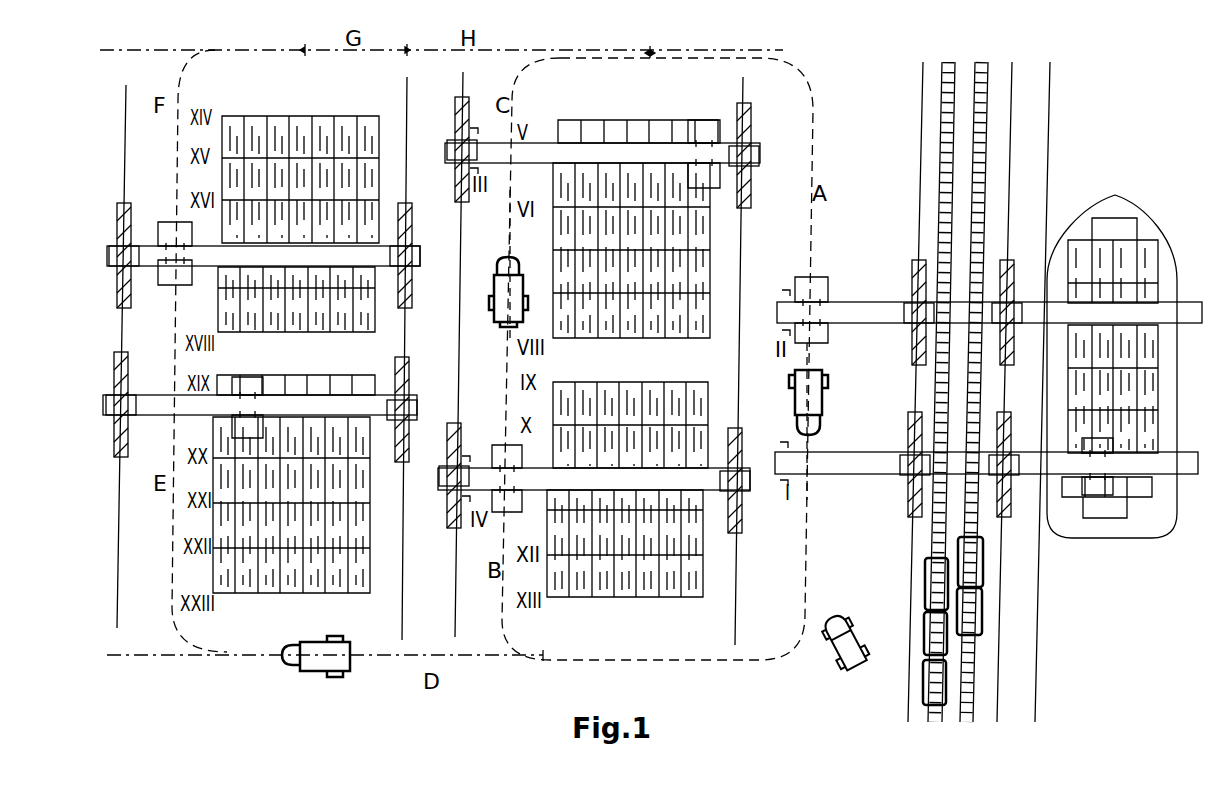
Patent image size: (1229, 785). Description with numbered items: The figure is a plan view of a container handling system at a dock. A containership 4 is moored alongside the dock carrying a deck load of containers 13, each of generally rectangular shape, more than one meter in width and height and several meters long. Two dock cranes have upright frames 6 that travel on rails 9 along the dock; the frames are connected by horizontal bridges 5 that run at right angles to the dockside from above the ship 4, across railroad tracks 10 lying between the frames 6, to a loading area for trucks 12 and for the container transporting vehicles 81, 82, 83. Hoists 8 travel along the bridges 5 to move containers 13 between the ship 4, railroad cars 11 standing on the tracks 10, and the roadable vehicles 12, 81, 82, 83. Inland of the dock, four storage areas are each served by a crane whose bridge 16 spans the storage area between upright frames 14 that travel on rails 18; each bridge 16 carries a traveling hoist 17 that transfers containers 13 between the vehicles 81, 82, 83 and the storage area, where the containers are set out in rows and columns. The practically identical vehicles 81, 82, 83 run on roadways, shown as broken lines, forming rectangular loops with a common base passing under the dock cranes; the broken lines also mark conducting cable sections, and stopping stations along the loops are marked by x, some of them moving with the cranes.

The containership 4 is at (1148, 232).
The horizontal bridge 5 is at (1175, 462).
The upright frame 6 is at (1010, 435).
The hoist 8 is at (1092, 488).
The rail 9 is at (1010, 195).
The railroad track 10 is at (985, 175).
The railroad car 11 is at (925, 595).
The truck 12 is at (845, 655).
The container 13 is at (1150, 372).
The upright frame 14 is at (743, 520).
The bridge 16 is at (725, 495).
The traveling hoist 17 is at (518, 505).
The rail 18 is at (740, 230).
The container transporting vehicle 81 is at (505, 300).
The container transporting vehicle 82 is at (812, 425).
The container transporting vehicle 83 is at (296, 662).